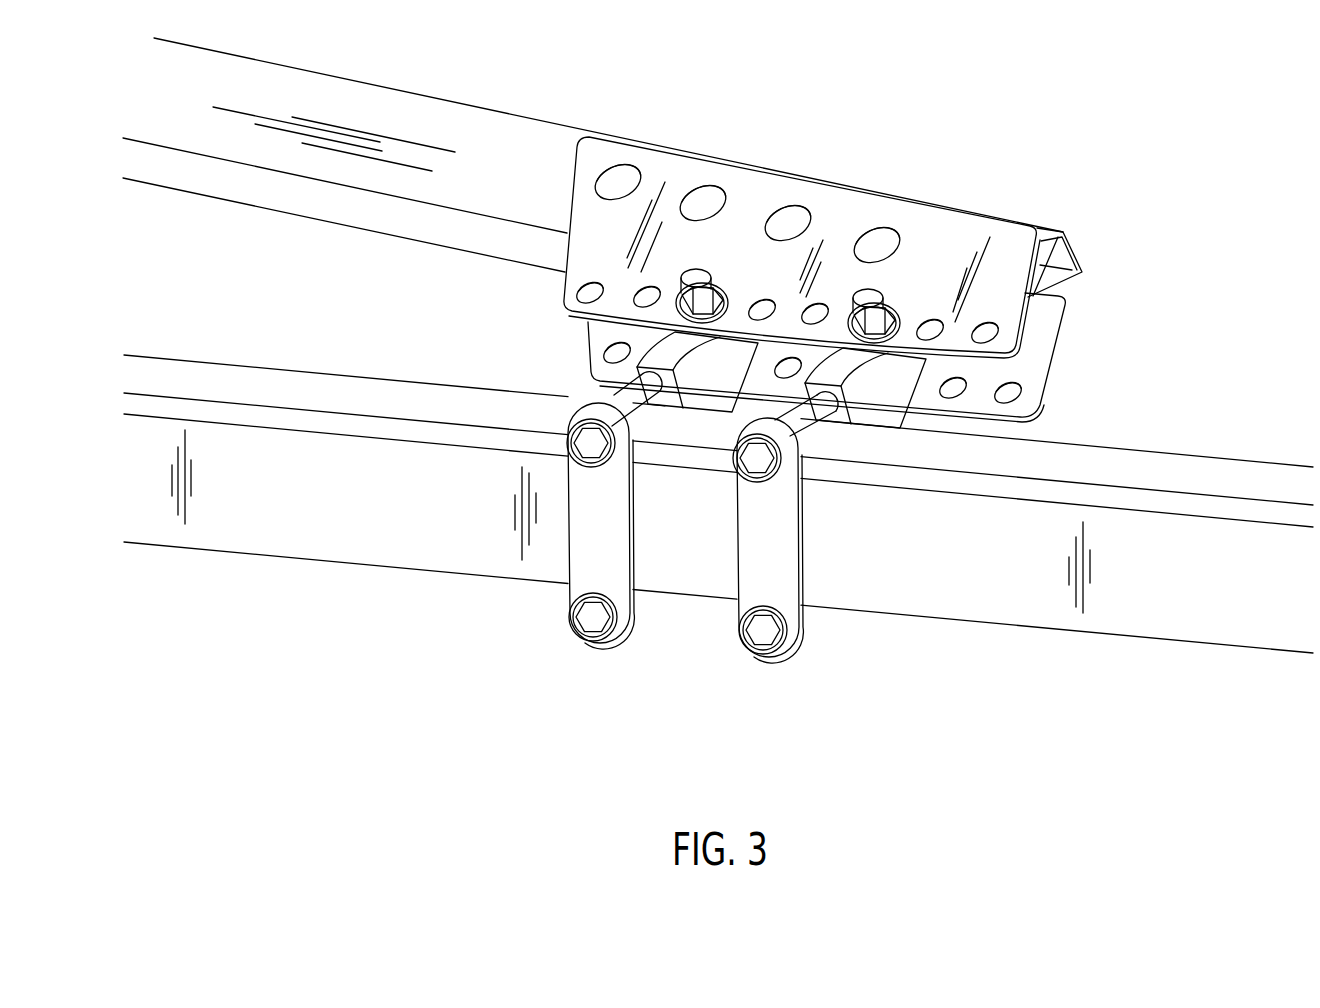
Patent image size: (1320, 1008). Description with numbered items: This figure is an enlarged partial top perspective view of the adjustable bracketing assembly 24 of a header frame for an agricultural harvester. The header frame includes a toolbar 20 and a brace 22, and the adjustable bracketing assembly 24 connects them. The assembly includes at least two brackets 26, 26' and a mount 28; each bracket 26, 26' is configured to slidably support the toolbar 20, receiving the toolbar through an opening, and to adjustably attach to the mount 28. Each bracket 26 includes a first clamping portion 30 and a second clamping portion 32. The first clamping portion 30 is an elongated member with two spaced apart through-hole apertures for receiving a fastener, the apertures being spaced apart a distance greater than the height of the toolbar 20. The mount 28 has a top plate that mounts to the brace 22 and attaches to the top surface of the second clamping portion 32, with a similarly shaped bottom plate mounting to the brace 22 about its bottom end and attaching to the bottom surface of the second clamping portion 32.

The toolbar 20 is at (315, 528).
The brace 22 is at (440, 97).
The adjustable bracketing assembly 24 is at (895, 366).
The bracket 26 is at (780, 585).
The bracket 26' is at (614, 563).
The mount 28 is at (1098, 285).
The first clamping portion 30 is at (777, 592).
The second clamping portion 32 is at (1040, 397).